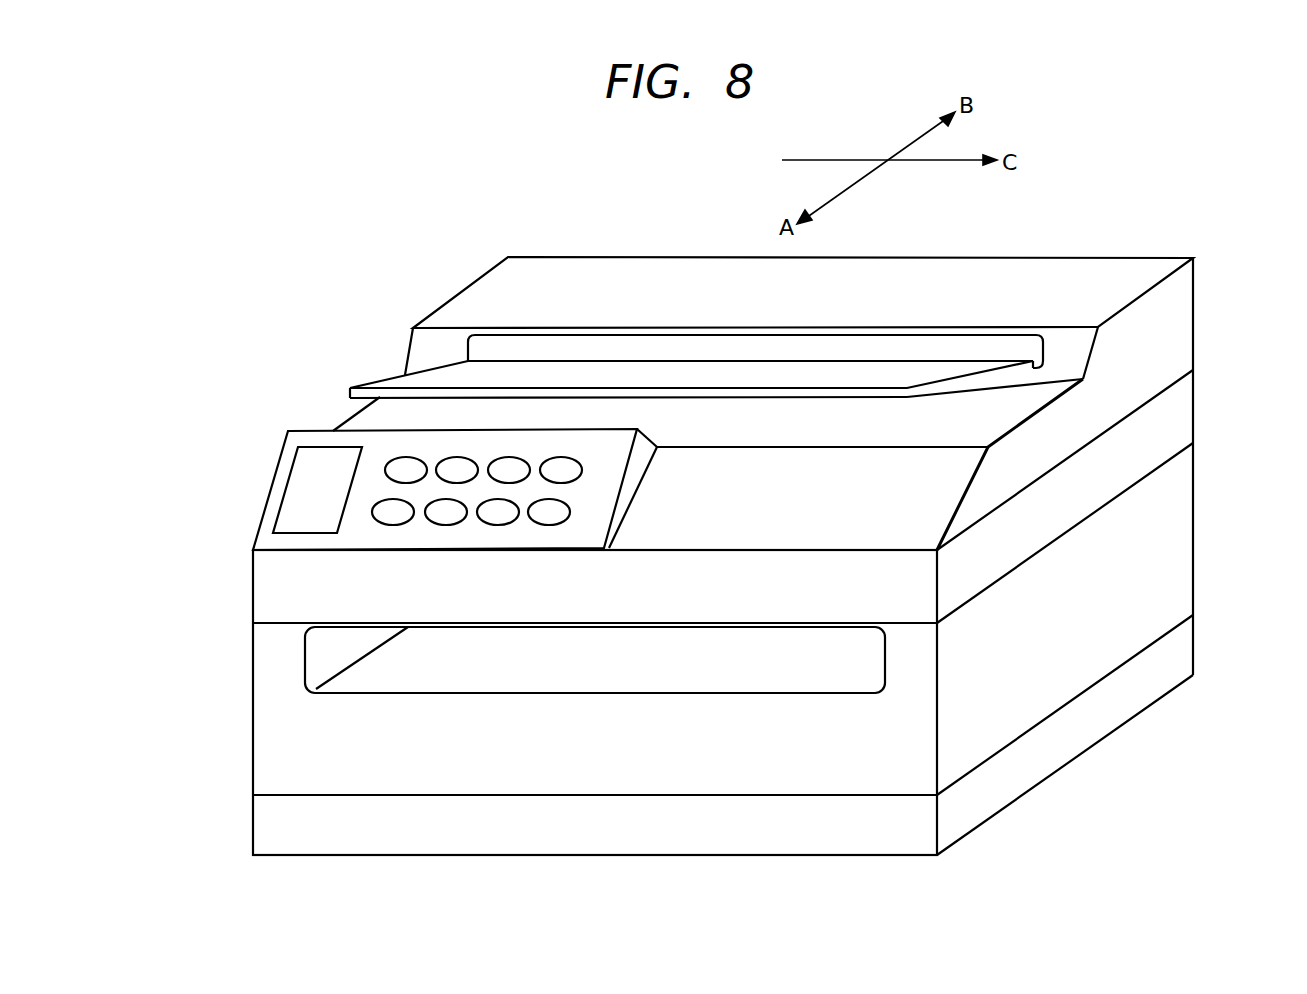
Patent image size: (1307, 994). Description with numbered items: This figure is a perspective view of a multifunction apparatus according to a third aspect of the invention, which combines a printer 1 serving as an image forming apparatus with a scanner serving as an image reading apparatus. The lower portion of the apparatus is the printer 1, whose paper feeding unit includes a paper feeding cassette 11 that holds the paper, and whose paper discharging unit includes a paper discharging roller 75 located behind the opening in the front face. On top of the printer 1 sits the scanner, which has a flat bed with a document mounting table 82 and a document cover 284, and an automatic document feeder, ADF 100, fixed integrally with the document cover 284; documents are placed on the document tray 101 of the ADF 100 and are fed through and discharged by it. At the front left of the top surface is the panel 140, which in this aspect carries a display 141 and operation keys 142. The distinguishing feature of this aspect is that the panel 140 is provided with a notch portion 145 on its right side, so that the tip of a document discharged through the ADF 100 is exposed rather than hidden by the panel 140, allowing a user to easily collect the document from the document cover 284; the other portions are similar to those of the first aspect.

The printer 1 is at (1205, 552).
The paper feeding cassette 11 is at (893, 826).
The paper discharging roller 75 is at (805, 666).
The document mounting table 82 is at (1187, 413).
The automatic document feeder 100 is at (1119, 254).
The document tray 101 is at (925, 373).
The panel 140 is at (274, 456).
The display unit 141 is at (295, 513).
The operation keys 142 is at (570, 531).
The notch portion 145 is at (650, 455).
The document cover 284 is at (1028, 443).